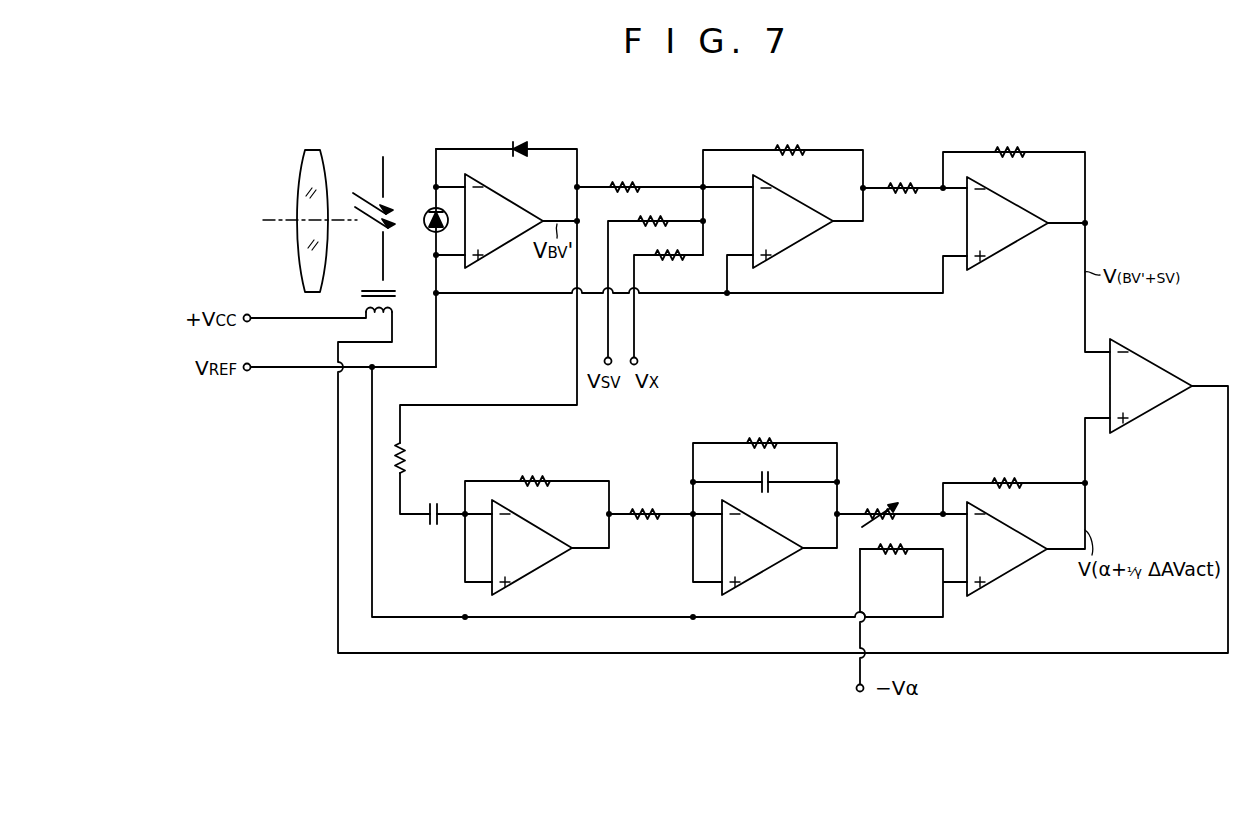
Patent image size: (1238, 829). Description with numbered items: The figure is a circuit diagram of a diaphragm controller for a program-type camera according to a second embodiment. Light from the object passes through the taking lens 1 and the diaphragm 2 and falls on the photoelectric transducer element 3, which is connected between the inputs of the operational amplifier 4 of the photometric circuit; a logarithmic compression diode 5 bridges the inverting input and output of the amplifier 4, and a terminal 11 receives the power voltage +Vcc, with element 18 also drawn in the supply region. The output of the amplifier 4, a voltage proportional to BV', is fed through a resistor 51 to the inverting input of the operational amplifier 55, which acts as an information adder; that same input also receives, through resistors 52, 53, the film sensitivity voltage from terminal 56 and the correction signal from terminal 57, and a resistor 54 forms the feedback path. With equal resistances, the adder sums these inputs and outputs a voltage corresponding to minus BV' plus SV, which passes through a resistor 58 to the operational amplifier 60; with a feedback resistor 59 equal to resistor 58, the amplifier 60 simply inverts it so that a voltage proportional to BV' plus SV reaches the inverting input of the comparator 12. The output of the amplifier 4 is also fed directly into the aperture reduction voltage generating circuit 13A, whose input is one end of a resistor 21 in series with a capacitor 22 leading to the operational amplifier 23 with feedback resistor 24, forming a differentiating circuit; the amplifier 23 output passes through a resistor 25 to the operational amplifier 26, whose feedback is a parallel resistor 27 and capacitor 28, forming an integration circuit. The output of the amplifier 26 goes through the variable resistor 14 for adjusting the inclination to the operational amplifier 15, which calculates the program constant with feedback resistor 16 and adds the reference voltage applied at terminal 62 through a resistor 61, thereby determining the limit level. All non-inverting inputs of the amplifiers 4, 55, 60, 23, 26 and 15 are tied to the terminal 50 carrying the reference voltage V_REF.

The taking lens 1 is at (305, 180).
The diaphragm 2 is at (383, 170).
The photoelectric transducer element 3 is at (428, 228).
The operational amplifier 4 is at (525, 217).
The logarithmic compression diode 5 is at (520, 145).
The terminal 11 is at (249, 314).
The comparator 12 is at (1163, 376).
The aperture reduction voltage generating circuit 13A is at (631, 487).
The variable resistor 14 is at (874, 508).
The operational amplifier 15 is at (1009, 565).
The resistor 16 is at (1008, 480).
The temperature compensating element 18 is at (393, 307).
The resistor 21 is at (404, 452).
The capacitor 22 is at (431, 527).
The operational amplifier 23 is at (539, 537).
The resistor 24 is at (536, 478).
The resistor 25 is at (644, 519).
The operational amplifier 26 is at (776, 560).
The resistor 27 is at (762, 440).
The capacitor 28 is at (764, 494).
The terminal 50 is at (250, 363).
The resistor 51 is at (622, 182).
The resistor 52 is at (652, 219).
The resistor 53 is at (666, 258).
The resistor 54 is at (790, 147).
The operational amplifier 55 is at (806, 217).
The terminal 56 is at (604, 360).
The terminal 57 is at (638, 360).
The resistor 58 is at (903, 184).
The resistor 59 is at (1008, 148).
The operational amplifier 60 is at (1023, 212).
The resistor 61 is at (891, 553).
The terminal 62 is at (856, 688).